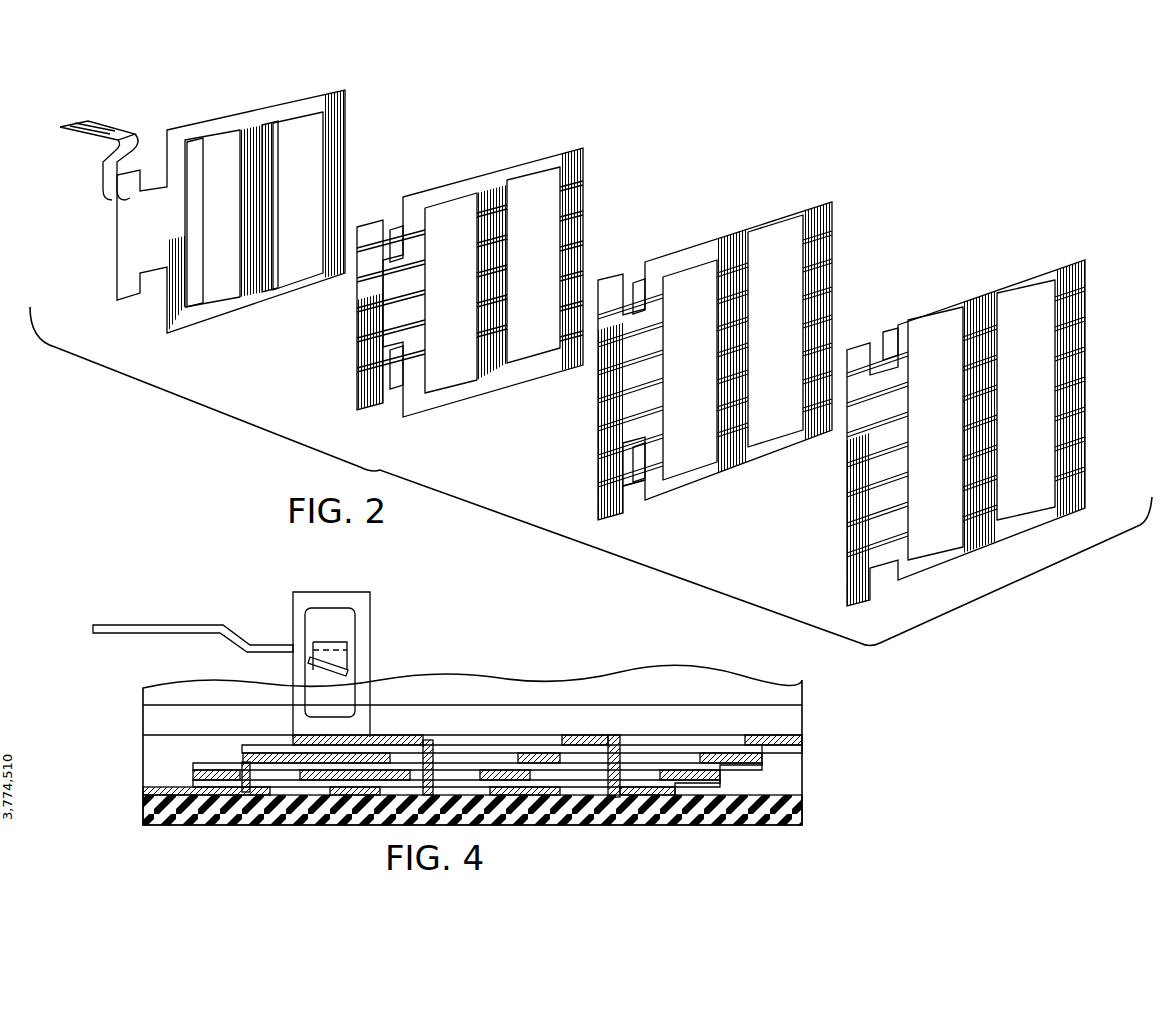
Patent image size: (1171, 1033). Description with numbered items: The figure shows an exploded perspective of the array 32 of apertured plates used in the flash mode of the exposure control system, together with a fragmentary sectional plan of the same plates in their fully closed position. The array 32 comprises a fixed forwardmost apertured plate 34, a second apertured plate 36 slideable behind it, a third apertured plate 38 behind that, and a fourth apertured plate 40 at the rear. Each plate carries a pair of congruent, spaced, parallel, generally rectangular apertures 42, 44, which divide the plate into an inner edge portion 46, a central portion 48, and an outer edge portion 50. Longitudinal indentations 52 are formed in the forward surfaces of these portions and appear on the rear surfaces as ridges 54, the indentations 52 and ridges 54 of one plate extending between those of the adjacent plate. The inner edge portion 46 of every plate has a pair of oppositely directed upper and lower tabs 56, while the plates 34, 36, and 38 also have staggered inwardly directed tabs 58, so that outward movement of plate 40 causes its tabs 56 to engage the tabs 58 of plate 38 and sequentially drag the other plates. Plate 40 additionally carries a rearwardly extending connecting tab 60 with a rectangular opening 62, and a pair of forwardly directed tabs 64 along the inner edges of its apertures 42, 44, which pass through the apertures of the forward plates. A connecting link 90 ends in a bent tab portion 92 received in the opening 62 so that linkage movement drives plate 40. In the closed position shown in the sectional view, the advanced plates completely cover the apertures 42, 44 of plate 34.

In FIG. 2, the array 32 is at (370, 470).
In FIG. 2, the forwardmost apertured plate 34 is at (1078, 262).
In FIG. 2, the second apertured plate 36 is at (818, 205).
In FIG. 2, the third apertured plate 38 is at (575, 148).
In FIG. 2, the fourth apertured plate 40 is at (325, 92).
In FIG. 2, the aperture 42 is at (212, 262).
In FIG. 2, the aperture 44 is at (295, 245).
In FIG. 4, the aperture 44 is at (385, 800).
In FIG. 2, the inner edge portion 46 is at (138, 242).
In FIG. 2, the central portion 48 is at (260, 125).
In FIG. 2, the outer edge portion 50 is at (345, 157).
In FIG. 2, the indentations 52 is at (480, 298).
In FIG. 2, the ridges 54 is at (560, 245).
In FIG. 2, the oppositely directed tabs 56 is at (125, 190).
In FIG. 2, the inwardly directed tabs 58 is at (398, 248).
In FIG. 2, the connecting tab 60 is at (130, 135).
In FIG. 4, the connecting tab 60 is at (370, 637).
In FIG. 2, the rectangular opening 62 is at (92, 122).
In FIG. 4, the rectangular opening 62 is at (340, 620).
In FIG. 2, the forwardly directed tabs 64 is at (195, 158).
In FIG. 4, the connecting link 90 is at (193, 625).
In FIG. 4, the bent tab portion 92 is at (310, 660).